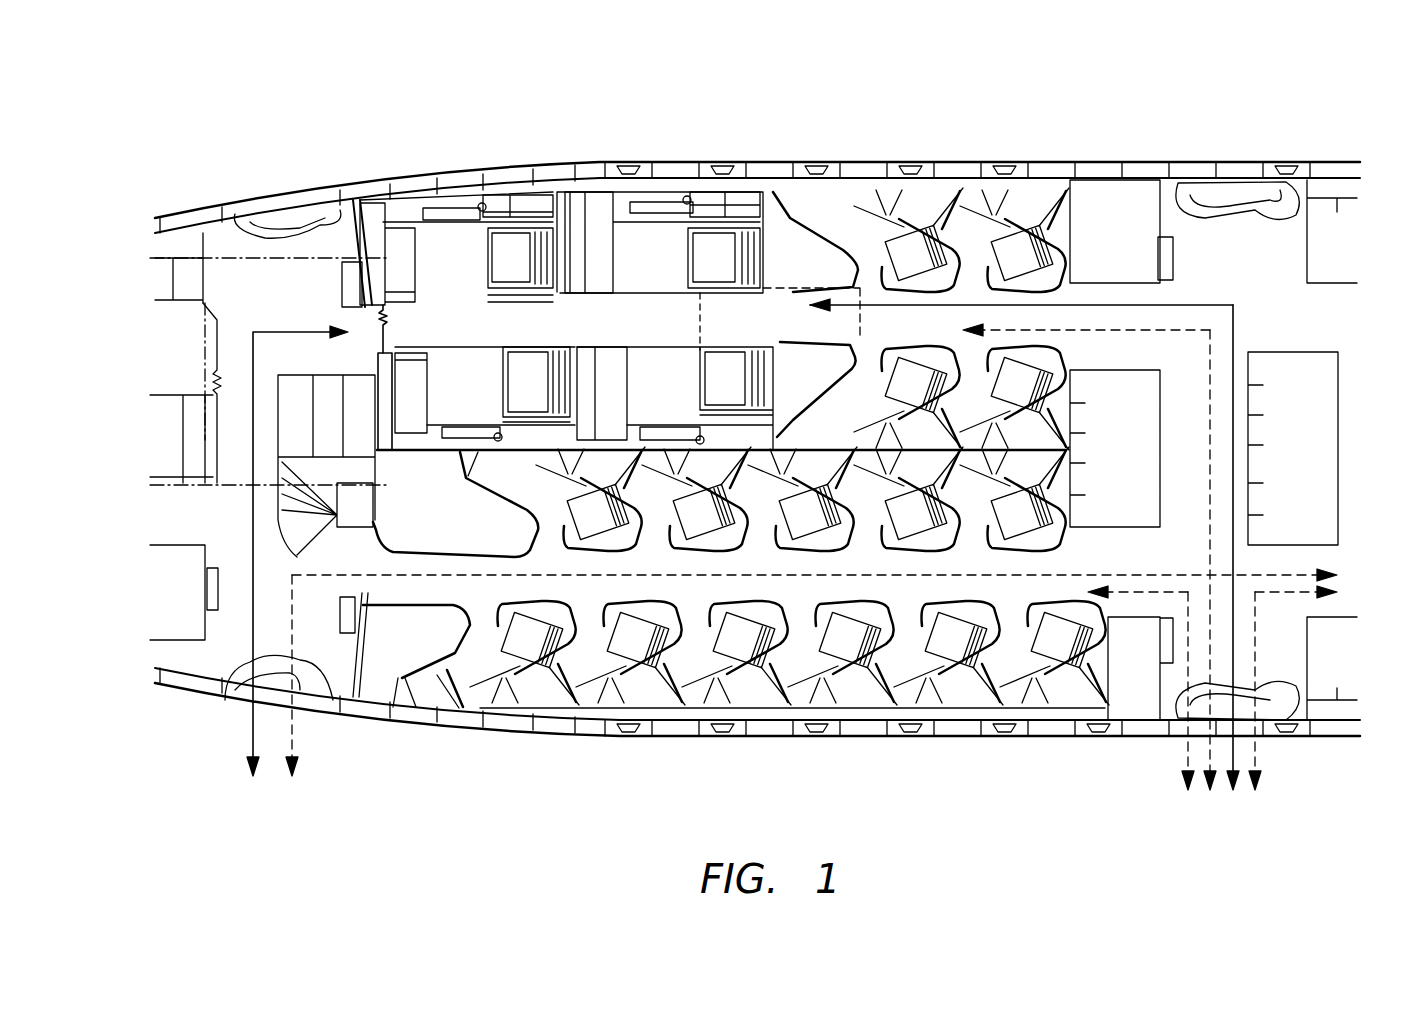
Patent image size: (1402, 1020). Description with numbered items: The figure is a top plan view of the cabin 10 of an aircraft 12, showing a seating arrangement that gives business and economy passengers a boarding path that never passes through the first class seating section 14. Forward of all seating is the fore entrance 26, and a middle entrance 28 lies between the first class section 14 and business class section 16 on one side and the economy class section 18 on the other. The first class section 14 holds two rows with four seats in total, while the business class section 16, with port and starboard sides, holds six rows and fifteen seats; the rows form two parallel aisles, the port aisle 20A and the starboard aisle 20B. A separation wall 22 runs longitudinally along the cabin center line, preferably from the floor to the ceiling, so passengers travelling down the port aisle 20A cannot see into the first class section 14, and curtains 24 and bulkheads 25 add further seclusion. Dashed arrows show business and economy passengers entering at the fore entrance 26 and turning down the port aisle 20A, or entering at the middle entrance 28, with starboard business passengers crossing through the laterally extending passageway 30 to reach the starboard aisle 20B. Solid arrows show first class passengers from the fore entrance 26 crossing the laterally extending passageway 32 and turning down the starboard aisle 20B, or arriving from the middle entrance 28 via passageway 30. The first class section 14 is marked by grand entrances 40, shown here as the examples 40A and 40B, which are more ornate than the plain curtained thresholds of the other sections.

The cabin 10 is at (1022, 125).
The aircraft 12 is at (356, 185).
The first class seating section 14 is at (652, 245).
The business class section 16 is at (985, 227).
The economy class section 18 is at (1385, 598).
The port aisle 20A is at (707, 601).
The starboard aisle 20B is at (922, 336).
The separation wall 22 is at (627, 433).
The curtain 24 is at (393, 323).
The bulkhead 25 is at (810, 272).
The fore entrance 26 is at (308, 705).
The middle entrance 28 is at (1278, 728).
The laterally extending passageway 30 is at (1197, 464).
The laterally extending passageway 32 is at (250, 438).
The grand entrance 40 is at (393, 333).
The grand entrance 40A is at (231, 487).
The grand entrance 40B is at (700, 313).